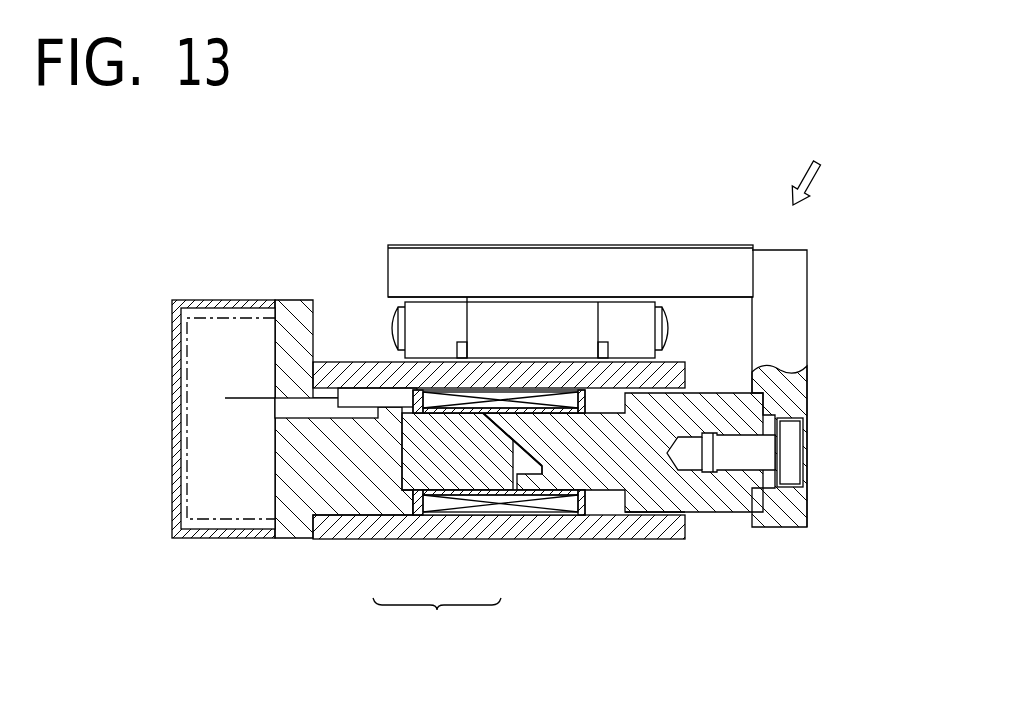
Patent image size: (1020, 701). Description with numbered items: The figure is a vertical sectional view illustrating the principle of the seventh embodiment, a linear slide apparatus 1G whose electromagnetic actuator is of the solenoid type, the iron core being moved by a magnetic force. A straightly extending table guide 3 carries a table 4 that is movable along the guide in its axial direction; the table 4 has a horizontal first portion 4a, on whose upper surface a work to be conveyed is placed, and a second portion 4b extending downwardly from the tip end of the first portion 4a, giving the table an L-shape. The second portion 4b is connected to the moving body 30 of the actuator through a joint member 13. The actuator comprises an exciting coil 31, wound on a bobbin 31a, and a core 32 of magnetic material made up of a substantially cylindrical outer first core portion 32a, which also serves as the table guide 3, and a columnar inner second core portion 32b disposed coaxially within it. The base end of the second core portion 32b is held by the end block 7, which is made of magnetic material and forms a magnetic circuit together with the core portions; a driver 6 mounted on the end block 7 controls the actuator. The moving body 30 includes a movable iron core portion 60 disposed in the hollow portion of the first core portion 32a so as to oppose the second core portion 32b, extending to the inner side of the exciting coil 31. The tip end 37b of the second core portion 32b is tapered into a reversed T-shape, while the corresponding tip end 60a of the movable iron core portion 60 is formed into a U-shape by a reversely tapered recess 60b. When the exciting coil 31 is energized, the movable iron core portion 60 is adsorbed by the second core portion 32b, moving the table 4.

The linear slide apparatus 1G is at (819, 165).
The table 4 is at (705, 236).
The first portion 4a is at (633, 280).
The second portion 4b is at (783, 287).
The table guide 3 is at (354, 350).
The exciting coil 31 is at (438, 405).
The bobbin 31a is at (370, 517).
The core 32 is at (437, 625).
The first core portion 32a is at (415, 525).
The second core portion 32b is at (467, 453).
The tip end 37b is at (520, 478).
The movable iron core portion 60 is at (598, 450).
The tip end 60a is at (545, 465).
The recess 60b is at (518, 468).
The moving body 30 is at (658, 518).
The joint member 13 is at (723, 493).
The driver 6 is at (217, 362).
The end block 7 is at (292, 520).